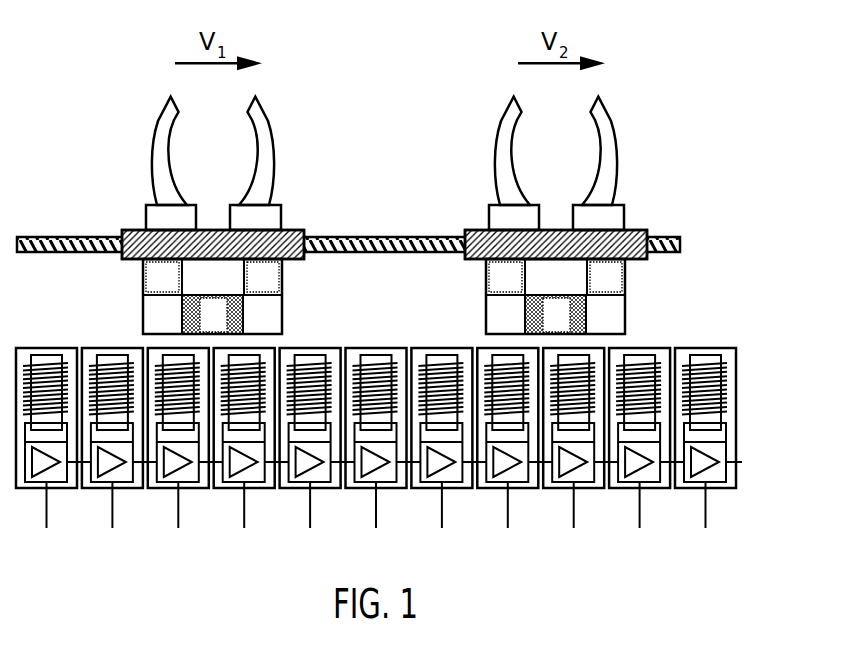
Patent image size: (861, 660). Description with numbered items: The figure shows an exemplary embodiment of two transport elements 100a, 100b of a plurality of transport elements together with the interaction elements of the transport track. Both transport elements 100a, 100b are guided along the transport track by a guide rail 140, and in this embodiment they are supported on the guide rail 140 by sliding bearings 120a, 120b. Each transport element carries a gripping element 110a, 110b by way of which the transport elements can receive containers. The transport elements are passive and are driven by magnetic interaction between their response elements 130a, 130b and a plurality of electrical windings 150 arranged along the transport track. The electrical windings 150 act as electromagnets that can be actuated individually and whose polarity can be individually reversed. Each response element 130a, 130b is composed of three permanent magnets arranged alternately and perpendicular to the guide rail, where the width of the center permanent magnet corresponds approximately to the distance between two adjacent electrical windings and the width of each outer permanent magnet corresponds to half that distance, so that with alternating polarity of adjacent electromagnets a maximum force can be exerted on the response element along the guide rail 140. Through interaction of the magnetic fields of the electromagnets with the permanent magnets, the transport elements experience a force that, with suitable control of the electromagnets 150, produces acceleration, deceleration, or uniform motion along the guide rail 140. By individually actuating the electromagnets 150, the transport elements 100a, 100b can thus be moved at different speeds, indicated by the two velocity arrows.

The transport element 100a is at (281, 214).
The transport element 100b is at (624, 214).
The gripping element 110a is at (256, 100).
The gripping element 110b is at (599, 100).
The sliding bearing 120a is at (304, 258).
The sliding bearing 120b is at (647, 258).
The response element 130a is at (282, 312).
The response element 130b is at (625, 312).
The guide rail 140 is at (50, 237).
The electrical windings 150 is at (733, 405).